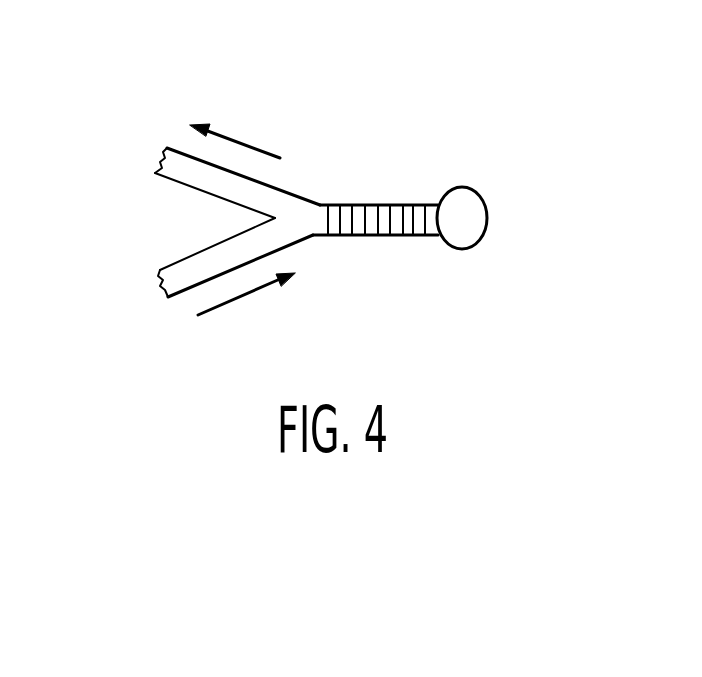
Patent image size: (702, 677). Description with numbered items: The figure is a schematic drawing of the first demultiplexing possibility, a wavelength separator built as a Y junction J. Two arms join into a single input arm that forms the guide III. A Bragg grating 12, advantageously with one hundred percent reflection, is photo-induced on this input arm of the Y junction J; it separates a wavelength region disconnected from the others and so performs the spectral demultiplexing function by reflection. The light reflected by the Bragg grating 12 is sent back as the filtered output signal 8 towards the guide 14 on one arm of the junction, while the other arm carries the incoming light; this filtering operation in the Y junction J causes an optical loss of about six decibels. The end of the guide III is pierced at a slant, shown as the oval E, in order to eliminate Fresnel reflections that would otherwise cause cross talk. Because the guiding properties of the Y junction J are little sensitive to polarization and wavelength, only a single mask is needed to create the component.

The guide 14 is at (158, 162).
The output signal 8 is at (158, 280).
The Bragg grating 12 is at (393, 208).
The oval E is at (482, 207).
The Y junction J is at (369, 167).
The guide III is at (432, 237).